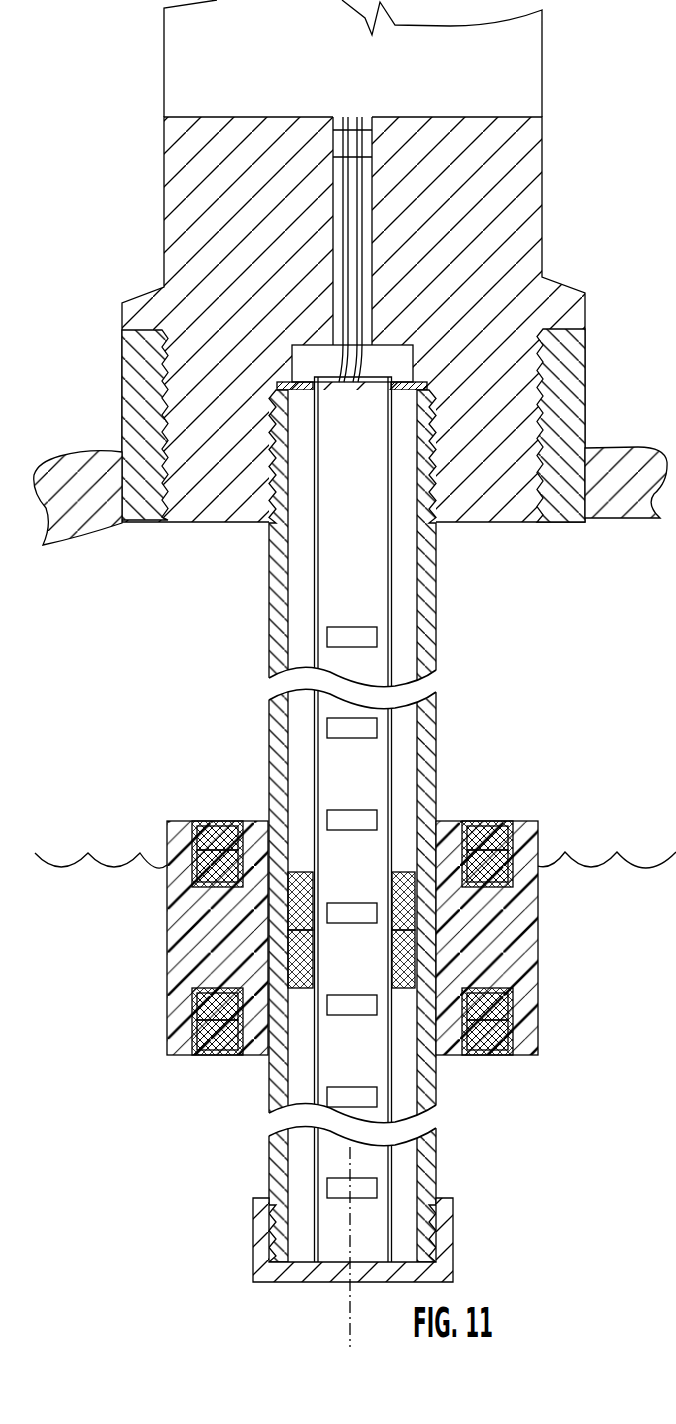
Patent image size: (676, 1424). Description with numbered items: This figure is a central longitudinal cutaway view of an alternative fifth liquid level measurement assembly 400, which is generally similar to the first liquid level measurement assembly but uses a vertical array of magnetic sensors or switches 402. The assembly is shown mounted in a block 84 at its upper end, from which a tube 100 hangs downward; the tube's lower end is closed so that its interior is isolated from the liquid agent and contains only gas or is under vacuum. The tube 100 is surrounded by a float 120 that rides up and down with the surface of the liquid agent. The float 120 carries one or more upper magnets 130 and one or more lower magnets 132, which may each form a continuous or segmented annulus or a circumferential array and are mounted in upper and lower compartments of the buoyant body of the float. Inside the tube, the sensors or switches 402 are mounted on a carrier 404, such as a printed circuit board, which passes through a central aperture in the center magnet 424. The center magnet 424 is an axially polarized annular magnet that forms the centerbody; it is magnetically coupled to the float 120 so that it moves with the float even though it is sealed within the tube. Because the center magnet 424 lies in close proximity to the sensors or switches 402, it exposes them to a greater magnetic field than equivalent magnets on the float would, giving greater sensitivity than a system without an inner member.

The mounting block 84 is at (492, 88).
The probe tube 100 is at (250, 619).
The fifth liquid level measurement assembly 400 is at (429, 829).
The magnetic sensors or switches 402 is at (367, 636).
The carrier 404 is at (365, 766).
The upper magnets 130 is at (492, 808).
The float 120 is at (560, 950).
The lower magnets 132 is at (216, 1066).
The center magnet 424 is at (404, 996).